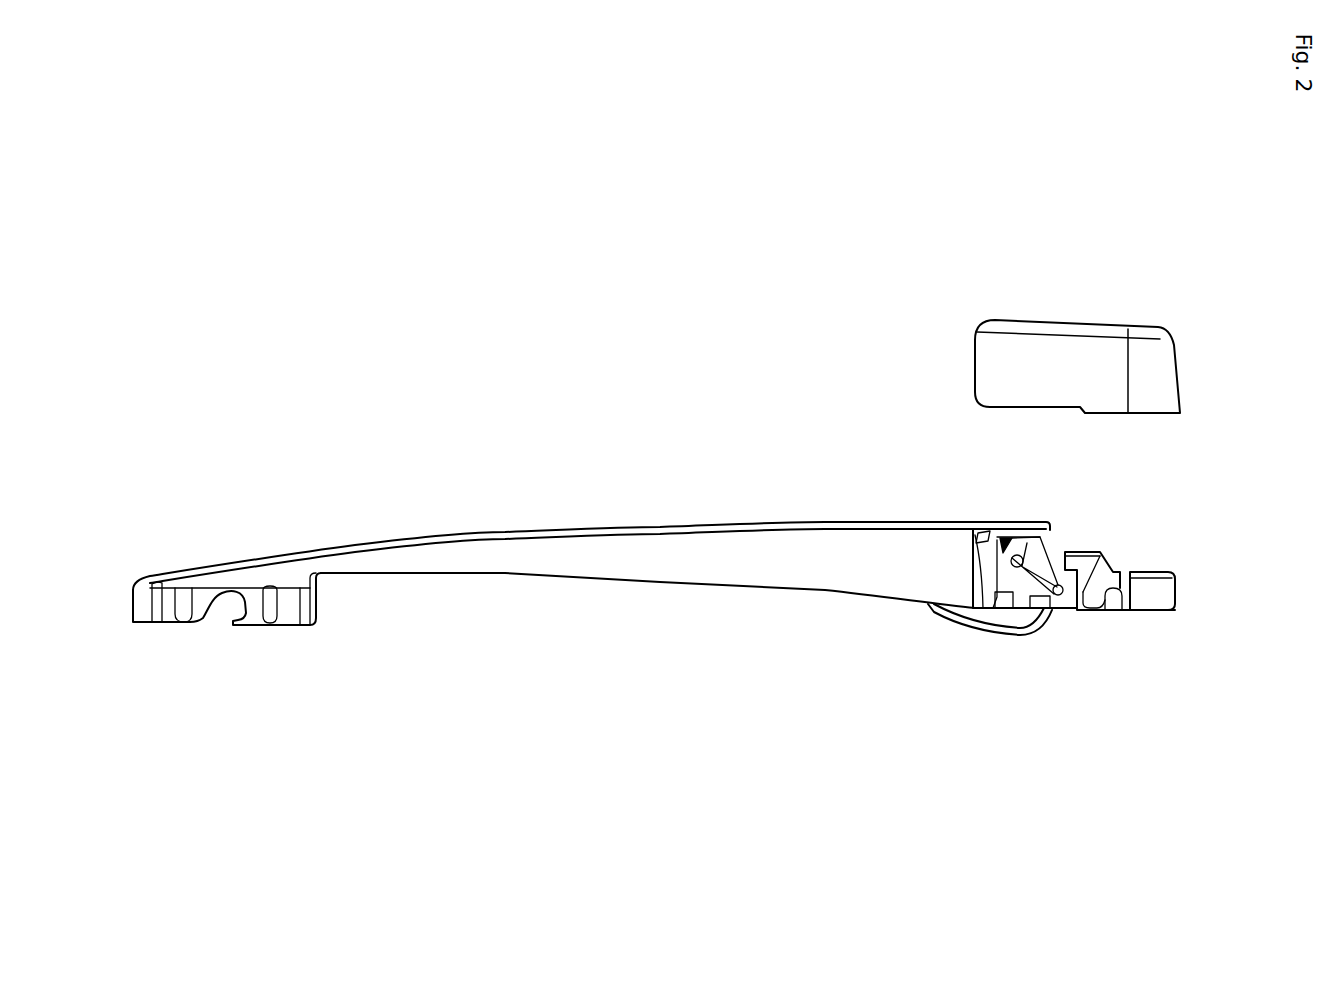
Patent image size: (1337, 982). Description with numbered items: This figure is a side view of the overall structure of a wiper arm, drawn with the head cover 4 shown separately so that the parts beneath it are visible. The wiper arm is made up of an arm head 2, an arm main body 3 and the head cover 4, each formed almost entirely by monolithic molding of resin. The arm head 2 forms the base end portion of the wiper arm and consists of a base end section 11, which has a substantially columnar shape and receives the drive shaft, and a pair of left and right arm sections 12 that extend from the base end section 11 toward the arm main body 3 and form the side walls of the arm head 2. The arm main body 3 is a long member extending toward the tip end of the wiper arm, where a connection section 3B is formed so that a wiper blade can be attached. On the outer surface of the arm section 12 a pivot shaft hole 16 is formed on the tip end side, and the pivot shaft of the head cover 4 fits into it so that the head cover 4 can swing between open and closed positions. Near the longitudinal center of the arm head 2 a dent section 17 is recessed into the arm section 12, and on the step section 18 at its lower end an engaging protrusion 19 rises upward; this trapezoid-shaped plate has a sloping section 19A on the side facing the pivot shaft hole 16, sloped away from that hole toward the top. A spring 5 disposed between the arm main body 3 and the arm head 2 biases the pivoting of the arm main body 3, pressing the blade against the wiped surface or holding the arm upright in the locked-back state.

The arm head 2 is at (1165, 568).
The arm main body 3 is at (727, 522).
The connection section 3B is at (197, 625).
The head cover 4 is at (1100, 318).
The spring 5 is at (968, 628).
The base end section 11 is at (1153, 600).
The arm section 12 is at (972, 535).
The pivot shaft hole 16 is at (1017, 555).
The dent section 17 is at (1073, 563).
The step section 18 is at (1122, 600).
The engaging protrusion 19 is at (1115, 573).
The sloping section 19A is at (1083, 592).